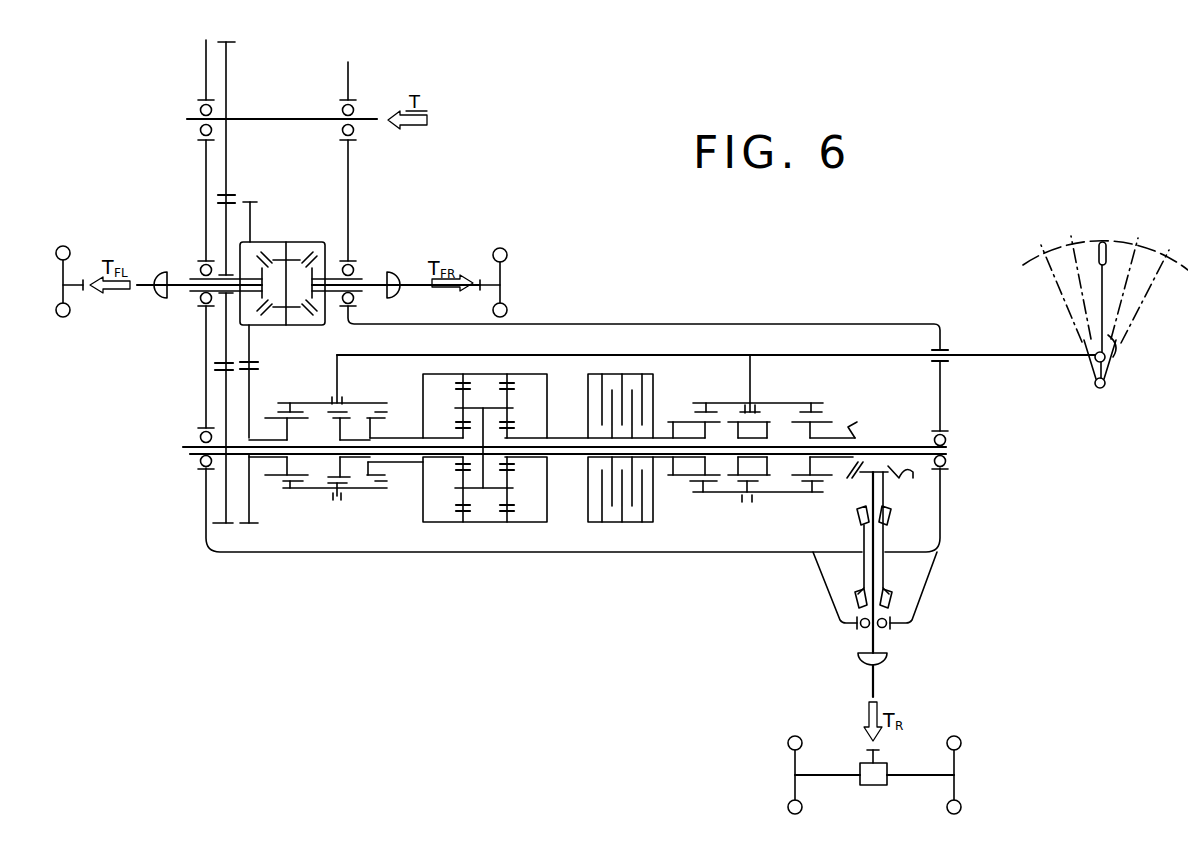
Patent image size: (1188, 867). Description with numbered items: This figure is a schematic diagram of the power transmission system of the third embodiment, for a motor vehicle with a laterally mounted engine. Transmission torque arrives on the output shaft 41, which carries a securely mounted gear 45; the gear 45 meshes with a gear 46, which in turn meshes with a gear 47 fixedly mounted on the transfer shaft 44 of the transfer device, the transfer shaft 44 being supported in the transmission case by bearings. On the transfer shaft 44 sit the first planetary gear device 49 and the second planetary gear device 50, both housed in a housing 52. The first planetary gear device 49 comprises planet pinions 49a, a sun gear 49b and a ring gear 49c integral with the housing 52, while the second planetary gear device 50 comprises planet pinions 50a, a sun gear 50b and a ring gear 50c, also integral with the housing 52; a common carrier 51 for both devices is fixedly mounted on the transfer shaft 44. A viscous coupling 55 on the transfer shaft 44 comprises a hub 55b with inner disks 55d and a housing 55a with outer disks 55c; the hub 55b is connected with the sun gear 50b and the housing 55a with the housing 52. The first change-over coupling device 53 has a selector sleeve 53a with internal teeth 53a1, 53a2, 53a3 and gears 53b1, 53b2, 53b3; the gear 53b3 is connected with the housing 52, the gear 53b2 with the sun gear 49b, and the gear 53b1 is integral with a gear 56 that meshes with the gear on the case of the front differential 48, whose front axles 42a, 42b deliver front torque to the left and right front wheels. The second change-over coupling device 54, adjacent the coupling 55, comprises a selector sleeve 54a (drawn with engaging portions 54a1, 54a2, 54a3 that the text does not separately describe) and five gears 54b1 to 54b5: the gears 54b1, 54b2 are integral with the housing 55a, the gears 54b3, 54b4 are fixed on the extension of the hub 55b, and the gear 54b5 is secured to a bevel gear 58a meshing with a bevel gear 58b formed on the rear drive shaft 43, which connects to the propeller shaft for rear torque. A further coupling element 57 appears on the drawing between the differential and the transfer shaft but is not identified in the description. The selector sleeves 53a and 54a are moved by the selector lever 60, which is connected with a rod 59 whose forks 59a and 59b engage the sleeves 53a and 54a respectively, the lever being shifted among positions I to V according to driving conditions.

The output shaft 41 is at (268, 118).
The front axle 42a is at (186, 286).
The front axle 42b is at (368, 281).
The rear drive shaft 43 is at (876, 648).
The transfer shaft 44 is at (191, 452).
The gear 45 is at (227, 172).
The gear 46 is at (226, 228).
The gear 47 is at (223, 405).
The front differential 48 is at (320, 228).
The first planetary gear device 49 is at (452, 557).
The planet pinions 49a is at (458, 390).
The sun gear 49b is at (460, 432).
The ring gear 49c is at (453, 518).
The second planetary gear device 50 is at (530, 554).
The planet pinions 50a is at (524, 388).
The sun gear 50b is at (508, 459).
The ring gear 50c is at (515, 523).
The common carrier 51 is at (503, 504).
The housing 52 is at (486, 528).
The first change-over coupling device 53 is at (330, 553).
The selector sleeve 53a is at (356, 403).
The internal teeth 53a1 is at (302, 400).
The internal teeth 53a2 is at (329, 412).
The internal teeth 53a3 is at (408, 401).
The gear 53b1 is at (275, 478).
The gear 53b2 is at (325, 468).
The gear 53b3 is at (352, 470).
The second change-over coupling device 54 is at (748, 556).
The selector sleeve 54a is at (774, 403).
The clutch plate 54a1 is at (688, 420).
The clutch plate 54a2 is at (746, 413).
The clutch plate 54a3 is at (832, 406).
The gear 54b1 is at (674, 481).
The gear 54b2 is at (715, 476).
The gear 54b3 is at (737, 481).
The gear 54b4 is at (769, 480).
The gear 54b5 is at (824, 476).
The viscous coupling 55 is at (615, 556).
The housing 55a is at (656, 525).
The hub 55b is at (606, 438).
The outer disks 55c is at (626, 510).
The inner disks 55d is at (594, 493).
The gear 56 is at (262, 513).
The clutch 57 is at (252, 360).
The bevel gear 58a is at (850, 420).
The bevel gear 58b is at (888, 493).
The rod 59 is at (1026, 353).
The fork 59a is at (335, 357).
The fork 59b is at (751, 365).
The selector lever 60 is at (1117, 347).